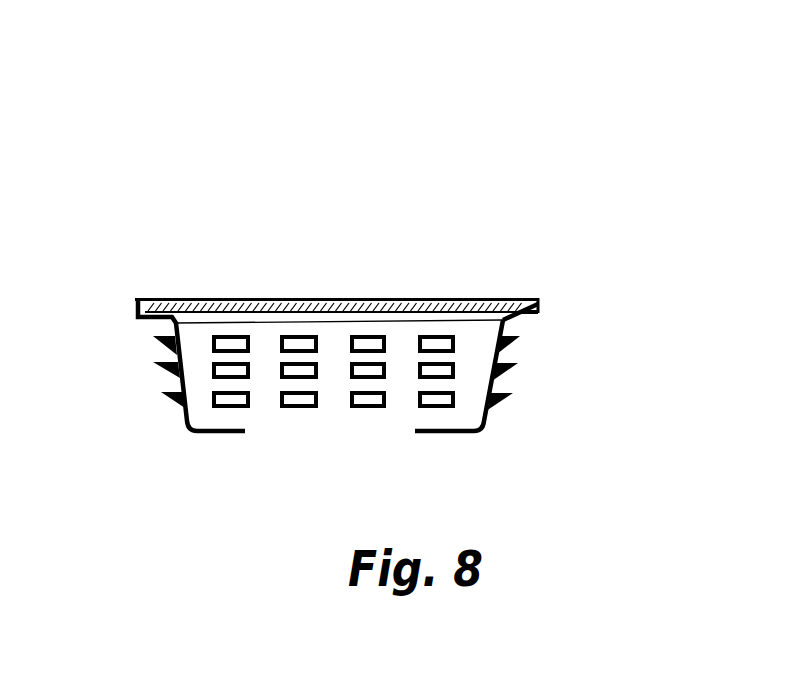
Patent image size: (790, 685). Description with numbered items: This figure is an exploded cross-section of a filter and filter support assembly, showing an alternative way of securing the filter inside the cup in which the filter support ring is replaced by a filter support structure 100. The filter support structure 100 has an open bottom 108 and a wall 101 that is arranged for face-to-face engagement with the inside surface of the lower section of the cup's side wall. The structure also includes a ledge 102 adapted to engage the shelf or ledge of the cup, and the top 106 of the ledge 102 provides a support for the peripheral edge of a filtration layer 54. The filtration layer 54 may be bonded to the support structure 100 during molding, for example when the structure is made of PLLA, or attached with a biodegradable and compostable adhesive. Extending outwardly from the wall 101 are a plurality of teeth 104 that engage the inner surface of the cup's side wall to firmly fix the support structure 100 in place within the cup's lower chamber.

The filtration layer 54 is at (447, 297).
The filter support structure 100 is at (323, 303).
The wall 101 is at (179, 347).
The ledge 102 is at (520, 320).
The teeth 104 is at (153, 362).
The top of the ledge 106 is at (527, 297).
The open bottom 108 is at (302, 438).